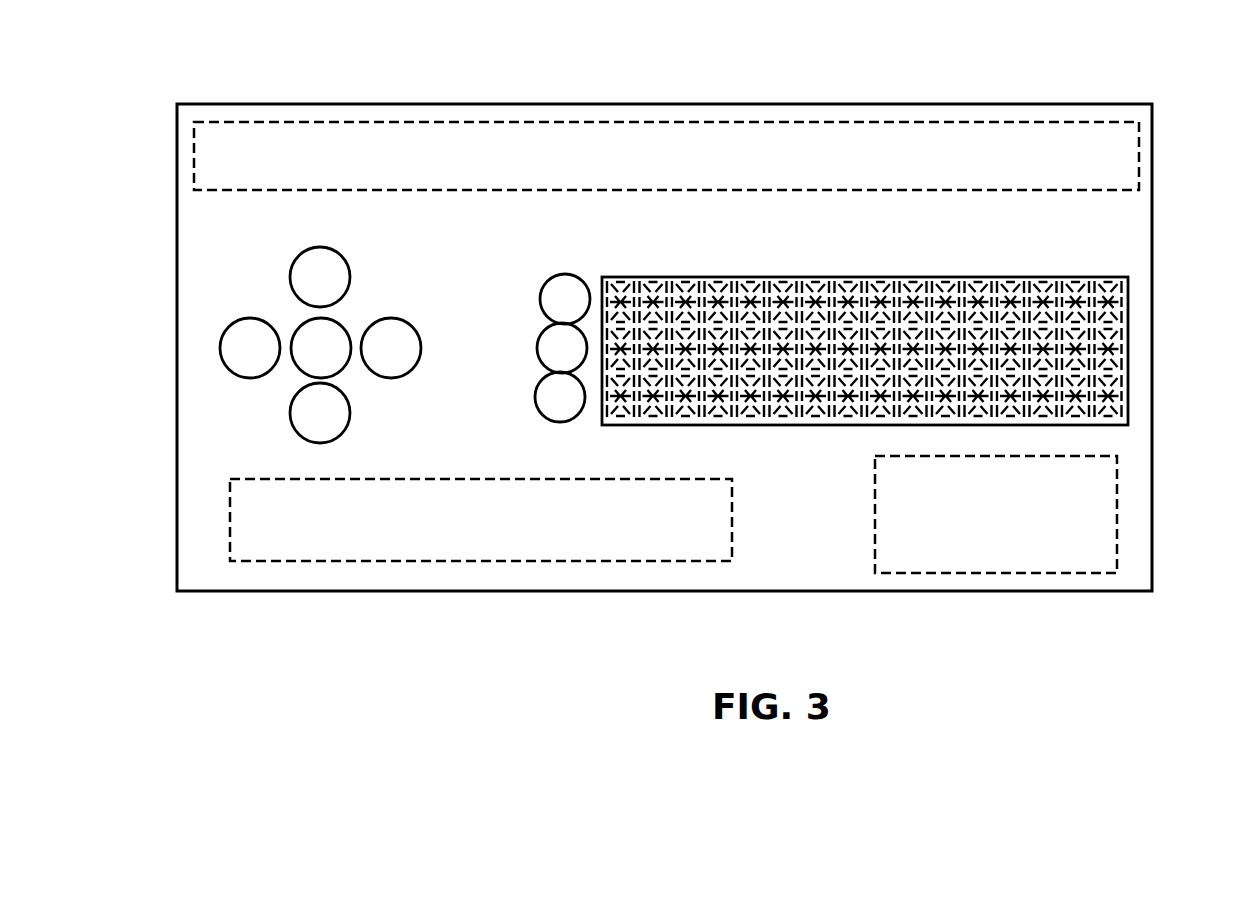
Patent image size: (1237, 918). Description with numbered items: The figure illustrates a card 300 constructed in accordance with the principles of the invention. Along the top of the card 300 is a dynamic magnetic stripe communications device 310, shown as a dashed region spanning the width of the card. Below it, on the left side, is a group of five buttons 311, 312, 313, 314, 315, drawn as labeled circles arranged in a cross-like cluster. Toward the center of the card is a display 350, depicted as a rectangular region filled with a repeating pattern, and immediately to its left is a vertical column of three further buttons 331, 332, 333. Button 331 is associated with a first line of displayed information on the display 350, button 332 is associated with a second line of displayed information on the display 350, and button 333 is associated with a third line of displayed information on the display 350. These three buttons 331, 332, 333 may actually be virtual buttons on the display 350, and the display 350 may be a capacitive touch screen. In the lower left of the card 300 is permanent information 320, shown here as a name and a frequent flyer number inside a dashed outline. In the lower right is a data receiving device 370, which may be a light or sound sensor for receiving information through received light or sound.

The card 300 is at (707, 347).
The dynamic magnetic stripe communications device 310 is at (262, 190).
The button 311 is at (251, 318).
The button 312 is at (320, 247).
The button 313 is at (312, 320).
The button 314 is at (420, 352).
The button 315 is at (292, 412).
The permanent information 320 is at (230, 520).
The button 331 is at (566, 276).
The button 332 is at (555, 320).
The button 333 is at (546, 376).
The display 350 is at (858, 424).
The data receiving device 370 is at (876, 570).